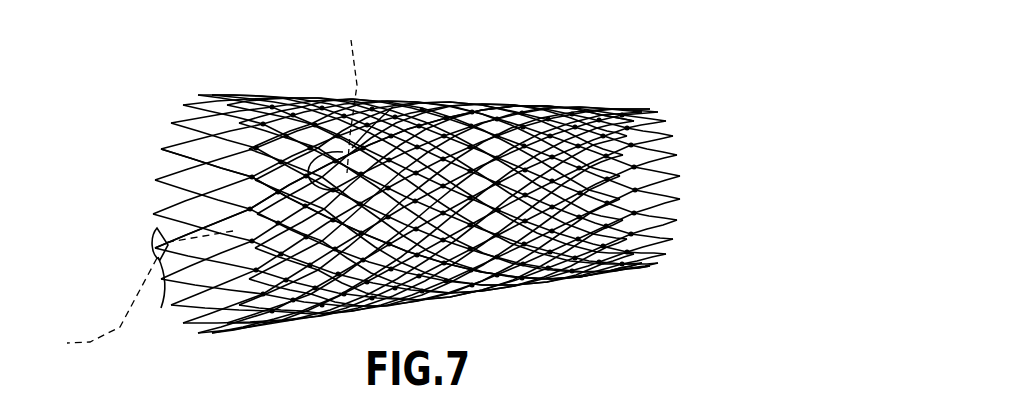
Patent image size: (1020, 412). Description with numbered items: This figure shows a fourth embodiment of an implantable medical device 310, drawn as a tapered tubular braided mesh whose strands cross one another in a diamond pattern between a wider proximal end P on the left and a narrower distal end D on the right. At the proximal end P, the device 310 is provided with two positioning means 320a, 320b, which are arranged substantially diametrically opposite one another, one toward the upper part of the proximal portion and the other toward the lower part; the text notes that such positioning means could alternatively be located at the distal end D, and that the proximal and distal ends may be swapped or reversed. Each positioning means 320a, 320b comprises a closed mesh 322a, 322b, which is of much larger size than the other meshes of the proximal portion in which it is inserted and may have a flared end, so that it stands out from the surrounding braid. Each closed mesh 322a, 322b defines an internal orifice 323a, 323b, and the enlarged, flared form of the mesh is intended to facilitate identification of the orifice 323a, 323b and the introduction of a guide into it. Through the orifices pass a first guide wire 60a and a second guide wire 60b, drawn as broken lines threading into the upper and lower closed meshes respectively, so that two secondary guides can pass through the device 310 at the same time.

The implantable medical device 310 is at (521, 93).
The positioning means 320a is at (371, 190).
The positioning means 320b is at (157, 230).
The closed mesh 322a is at (293, 119).
The closed mesh 322b is at (155, 238).
The internal orifice 323a is at (393, 107).
The internal orifice 323b is at (161, 308).
The guide wire 60a is at (352, 62).
The guide wire 60b is at (110, 333).
The proximal end P is at (188, 100).
The distal end D is at (668, 128).